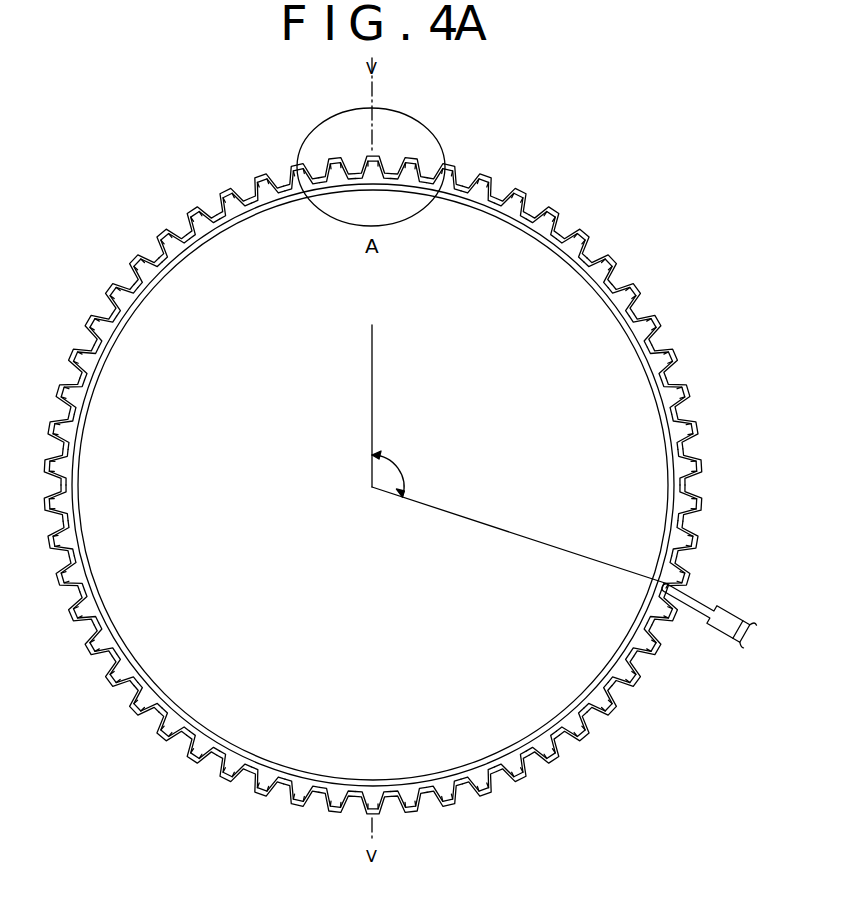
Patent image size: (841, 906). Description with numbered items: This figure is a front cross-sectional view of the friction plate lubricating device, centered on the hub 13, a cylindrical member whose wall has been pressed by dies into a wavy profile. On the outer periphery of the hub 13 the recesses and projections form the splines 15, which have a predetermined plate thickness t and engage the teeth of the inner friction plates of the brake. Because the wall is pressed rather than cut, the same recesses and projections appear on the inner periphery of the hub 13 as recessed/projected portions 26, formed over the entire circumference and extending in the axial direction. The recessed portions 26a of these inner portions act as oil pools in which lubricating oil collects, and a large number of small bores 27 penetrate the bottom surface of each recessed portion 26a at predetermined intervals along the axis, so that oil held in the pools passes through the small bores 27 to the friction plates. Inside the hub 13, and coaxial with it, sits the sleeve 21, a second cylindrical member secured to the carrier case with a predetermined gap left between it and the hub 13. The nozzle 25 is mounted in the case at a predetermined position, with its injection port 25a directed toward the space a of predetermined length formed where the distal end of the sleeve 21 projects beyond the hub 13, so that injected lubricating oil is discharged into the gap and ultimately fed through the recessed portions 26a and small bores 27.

The hub 13 is at (373, 454).
The splines 15 is at (373, 454).
The sleeve 21 is at (215, 230).
The nozzle 25 is at (681, 597).
The injection port 25a is at (669, 590).
The recessed/projected portions 26 is at (555, 240).
The recessed portions 26a is at (512, 202).
The small bores 27 is at (488, 170).
The plate thickness t is at (560, 290).
The space a is at (680, 428).